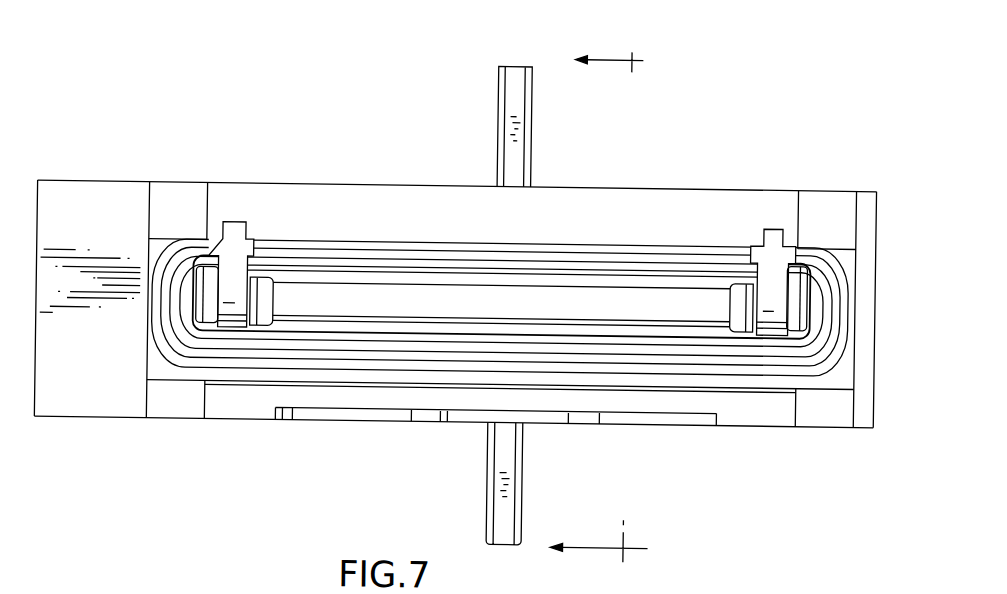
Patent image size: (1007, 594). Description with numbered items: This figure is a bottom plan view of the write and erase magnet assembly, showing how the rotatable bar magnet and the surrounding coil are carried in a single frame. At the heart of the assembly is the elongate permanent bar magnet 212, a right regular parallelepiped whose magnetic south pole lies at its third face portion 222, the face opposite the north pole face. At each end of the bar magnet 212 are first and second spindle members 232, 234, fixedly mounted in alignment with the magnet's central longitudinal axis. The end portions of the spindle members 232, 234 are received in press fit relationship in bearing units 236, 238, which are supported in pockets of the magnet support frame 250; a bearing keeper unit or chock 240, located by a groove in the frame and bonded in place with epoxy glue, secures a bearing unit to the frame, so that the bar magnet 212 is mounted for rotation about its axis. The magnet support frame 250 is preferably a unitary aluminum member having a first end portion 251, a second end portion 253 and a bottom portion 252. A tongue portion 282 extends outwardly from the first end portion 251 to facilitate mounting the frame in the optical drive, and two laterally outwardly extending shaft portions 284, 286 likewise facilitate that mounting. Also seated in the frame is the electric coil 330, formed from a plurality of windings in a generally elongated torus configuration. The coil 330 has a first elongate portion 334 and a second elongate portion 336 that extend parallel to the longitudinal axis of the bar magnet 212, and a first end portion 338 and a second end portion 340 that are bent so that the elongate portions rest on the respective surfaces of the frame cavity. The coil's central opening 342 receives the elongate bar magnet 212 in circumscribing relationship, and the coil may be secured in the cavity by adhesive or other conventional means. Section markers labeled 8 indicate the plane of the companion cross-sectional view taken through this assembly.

The section line 8- 8 is at (615, 304).
The elongate permanent bar magnet 212 is at (333, 285).
The third face portion 222 is at (305, 315).
The first spindle member 232 is at (260, 336).
The second spindle member 234 is at (740, 326).
The bearing unit 236 is at (218, 337).
The bearing unit 238 is at (766, 248).
The bearing keeper unit (chock) 240 is at (231, 225).
The magnet support frame 250 is at (810, 427).
The first end portion 251 is at (168, 184).
The bottom portion 252 is at (421, 203).
The second end portion 253 is at (842, 188).
The tongue portion 282 is at (82, 410).
The shaft portion 284 is at (528, 494).
The shaft portion 286 is at (530, 109).
The electric coil 330 is at (381, 378).
The first elongate portion 334 is at (680, 260).
The second elongate portion 336 is at (688, 367).
The first end portion 338 is at (164, 357).
The second end portion 340 is at (826, 338).
The central opening 342 is at (577, 284).